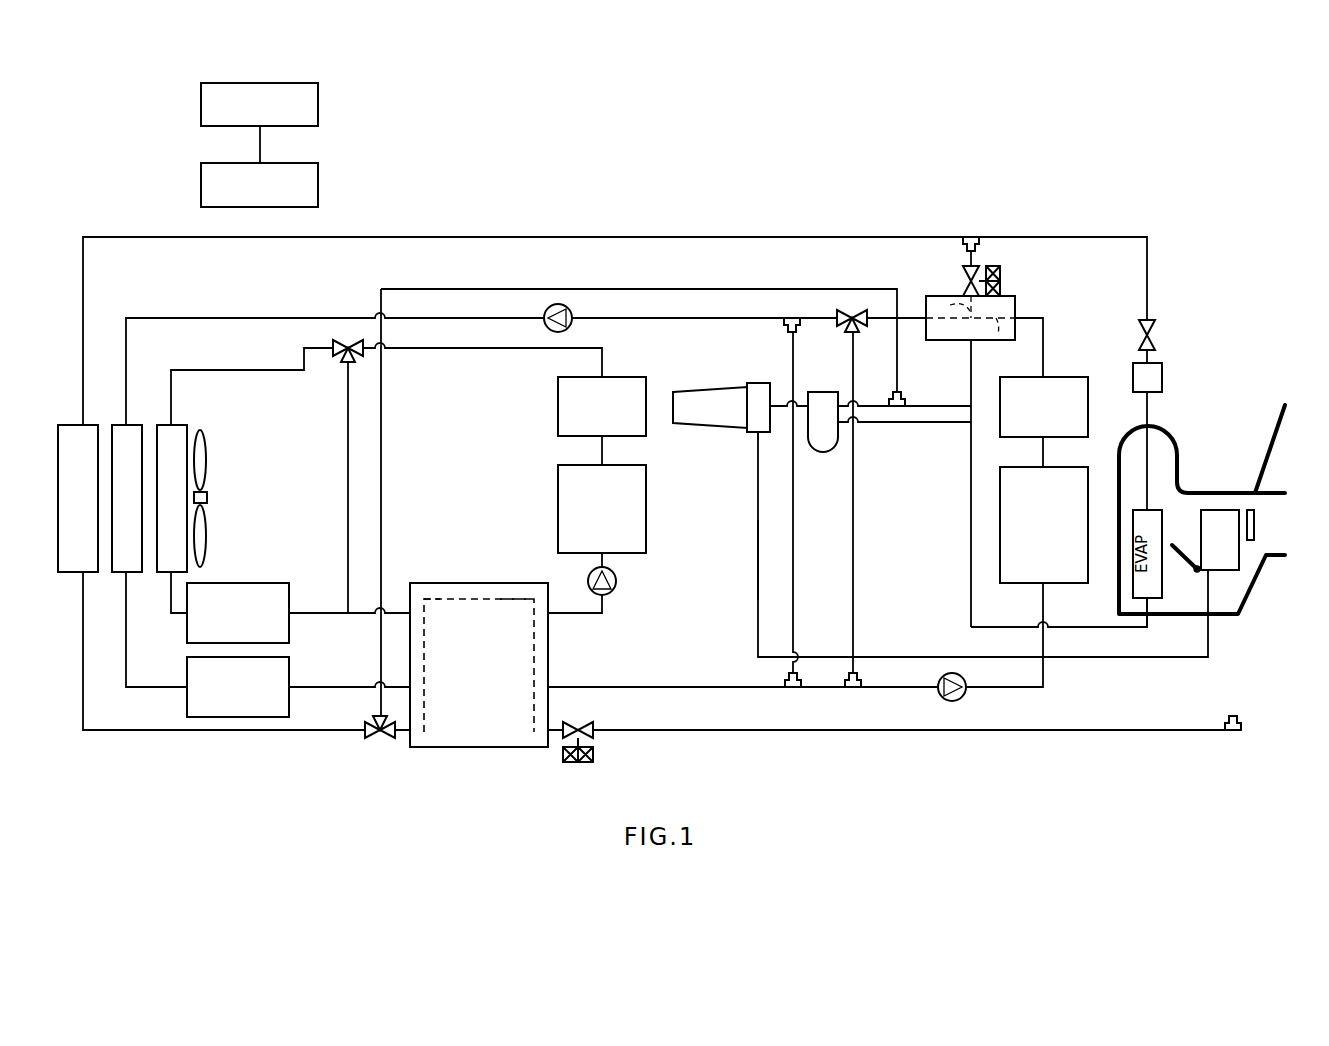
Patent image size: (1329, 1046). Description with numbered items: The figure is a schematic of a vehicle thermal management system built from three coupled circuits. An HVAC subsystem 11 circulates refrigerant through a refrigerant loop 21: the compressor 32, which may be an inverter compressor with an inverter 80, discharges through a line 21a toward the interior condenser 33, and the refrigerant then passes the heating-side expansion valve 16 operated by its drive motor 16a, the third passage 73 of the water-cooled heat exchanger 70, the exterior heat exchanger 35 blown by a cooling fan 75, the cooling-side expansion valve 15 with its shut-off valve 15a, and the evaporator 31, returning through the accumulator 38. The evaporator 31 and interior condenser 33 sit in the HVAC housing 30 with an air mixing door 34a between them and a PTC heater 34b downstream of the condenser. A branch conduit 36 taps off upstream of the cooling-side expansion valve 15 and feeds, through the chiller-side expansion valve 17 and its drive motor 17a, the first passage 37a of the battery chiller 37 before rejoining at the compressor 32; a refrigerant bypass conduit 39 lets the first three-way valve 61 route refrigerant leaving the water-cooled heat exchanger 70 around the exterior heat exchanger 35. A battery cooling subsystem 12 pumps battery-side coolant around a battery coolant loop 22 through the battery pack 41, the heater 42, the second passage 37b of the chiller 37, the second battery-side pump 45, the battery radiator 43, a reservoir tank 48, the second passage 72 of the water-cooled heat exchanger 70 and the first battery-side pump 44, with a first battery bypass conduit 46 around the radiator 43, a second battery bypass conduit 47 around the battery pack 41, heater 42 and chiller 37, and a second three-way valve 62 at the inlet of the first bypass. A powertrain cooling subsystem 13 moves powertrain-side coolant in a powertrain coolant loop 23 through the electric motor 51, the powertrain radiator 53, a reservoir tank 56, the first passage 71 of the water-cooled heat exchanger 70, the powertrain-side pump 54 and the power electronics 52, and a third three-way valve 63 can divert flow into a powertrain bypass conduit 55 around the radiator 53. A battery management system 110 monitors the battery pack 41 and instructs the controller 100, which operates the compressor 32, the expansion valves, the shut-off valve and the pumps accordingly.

The battery management system 110 is at (318, 104).
The controller 100 is at (318, 184).
The HVAC subsystem 11 is at (773, 228).
The refrigerant loop 21 is at (724, 237).
The refrigerant branch line 21a is at (758, 576).
The battery cooling subsystem 12 is at (1053, 323).
The battery coolant loop 22 is at (735, 318).
The refrigerant bypass conduit 39 is at (805, 289).
The powertrain coolant loop 23 is at (535, 348).
The powertrain bypass conduit 55 is at (348, 490).
The first battery bypass conduit 46 is at (853, 540).
The second battery bypass conduit 47 is at (793, 530).
The branch conduit 36 is at (971, 370).
The evaporator 31 is at (1155, 600).
The exterior heat exchanger 35 is at (72, 425).
The battery radiator 43 is at (117, 425).
The powertrain radiator 53 is at (160, 425).
The cooling fan 75 is at (207, 535).
The reservoir tank 56 is at (276, 583).
The reservoir tank 48 is at (289, 660).
The third three-way valve 63 is at (348, 338).
The first three-way valve 61 is at (380, 740).
The second three-way valve 62 is at (852, 308).
The heating-side expansion valve 16 is at (592, 728).
The drive motor 16a is at (578, 762).
The chiller-side expansion valve 17 is at (966, 270).
The drive motor 17a is at (1000, 272).
The shut-off valve 15a is at (1155, 340).
The cooling-side expansion valve 15 is at (1162, 377).
The second battery-side pump 45 is at (558, 304).
The powertrain-side pump 54 is at (616, 581).
The first battery-side pump 44 is at (952, 701).
The powertrain cooling subsystem 13 is at (565, 465).
The electric motor 51 is at (558, 425).
The power electronics 52 is at (558, 510).
The compressor 32 is at (710, 390).
The inverter 80 is at (757, 436).
The accumulator 38 is at (822, 392).
The battery chiller 37 is at (1015, 300).
The first passage 37a is at (951, 304).
The second passage 37b is at (998, 334).
The heater 42 is at (1088, 407).
The battery pack 41 is at (1000, 500).
The HVAC housing 30 is at (1238, 493).
The interior condenser 33 is at (1240, 553).
The air mixing door 34a is at (1182, 547).
The PTC heater 34b is at (1254, 525).
The water-cooled heat exchanger 70 is at (488, 747).
The second passage 72 is at (515, 690).
The third passage 73 is at (438, 599).
The first passage 71 is at (503, 606).